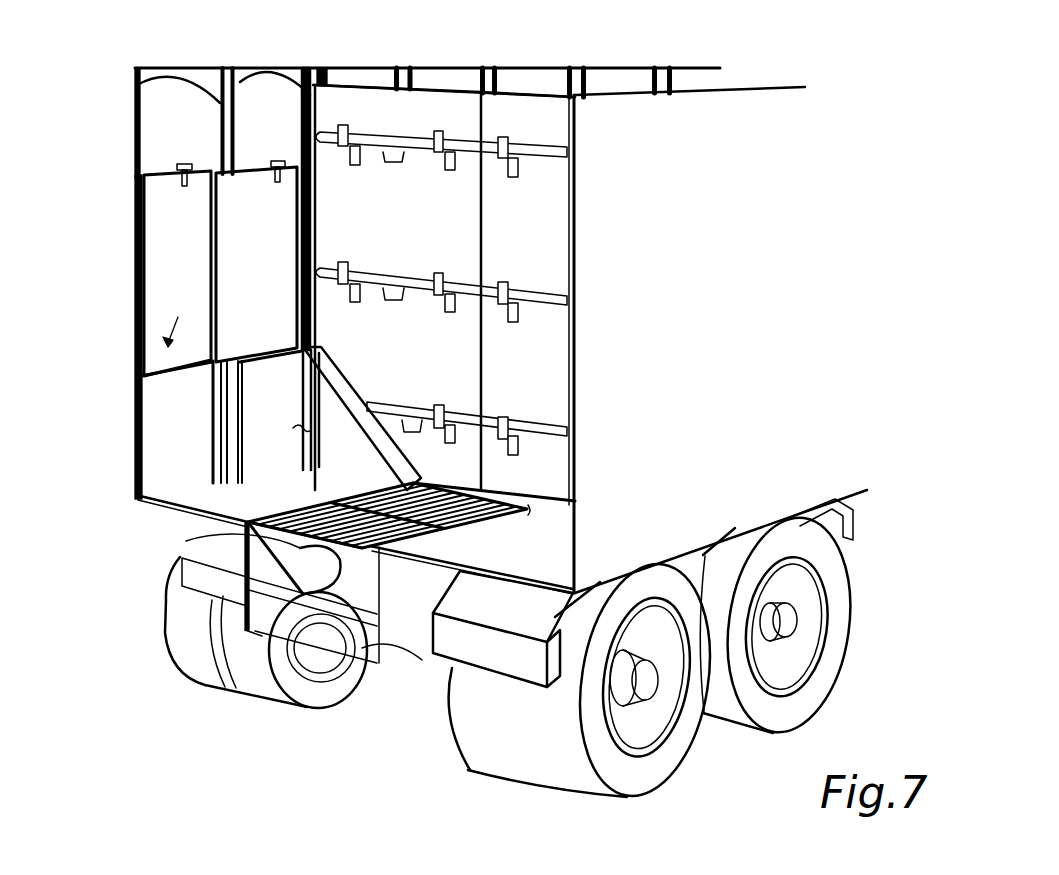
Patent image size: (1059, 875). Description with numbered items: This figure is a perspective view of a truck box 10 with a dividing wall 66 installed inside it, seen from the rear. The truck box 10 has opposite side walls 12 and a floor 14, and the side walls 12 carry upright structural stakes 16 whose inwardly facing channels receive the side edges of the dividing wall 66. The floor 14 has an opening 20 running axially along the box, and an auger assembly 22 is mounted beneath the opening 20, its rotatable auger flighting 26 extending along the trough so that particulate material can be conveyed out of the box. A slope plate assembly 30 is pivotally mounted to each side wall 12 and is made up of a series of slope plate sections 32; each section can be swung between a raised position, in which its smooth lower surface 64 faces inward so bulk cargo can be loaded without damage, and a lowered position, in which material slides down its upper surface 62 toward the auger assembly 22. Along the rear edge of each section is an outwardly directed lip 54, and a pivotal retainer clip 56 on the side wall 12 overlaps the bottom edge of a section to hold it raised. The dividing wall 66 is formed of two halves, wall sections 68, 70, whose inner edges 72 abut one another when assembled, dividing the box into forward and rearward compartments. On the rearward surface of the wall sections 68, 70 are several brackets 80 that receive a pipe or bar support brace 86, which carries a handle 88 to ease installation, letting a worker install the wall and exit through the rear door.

The truck box 10 is at (177, 58).
The side wall 12 is at (135, 240).
The floor 14 is at (202, 497).
The upright structural stake 16 is at (137, 85).
The opening 20 is at (205, 559).
The auger assembly 22 is at (187, 560).
The auger flighting 26 is at (332, 660).
The slope plate assembly 30 is at (253, 400).
The slope plate section 32 is at (162, 342).
The lip 54 is at (290, 427).
The retainer clip 56 is at (177, 166).
The upper surface 62 is at (303, 432).
The lower surface 64 is at (188, 258).
The dividing wall 66 is at (540, 330).
The wall section 68 is at (394, 239).
The wall section 70 is at (552, 249).
The inner edge 72 is at (478, 214).
The bracket 80 is at (503, 137).
The support brace 86 is at (422, 140).
The handle 88 is at (395, 162).